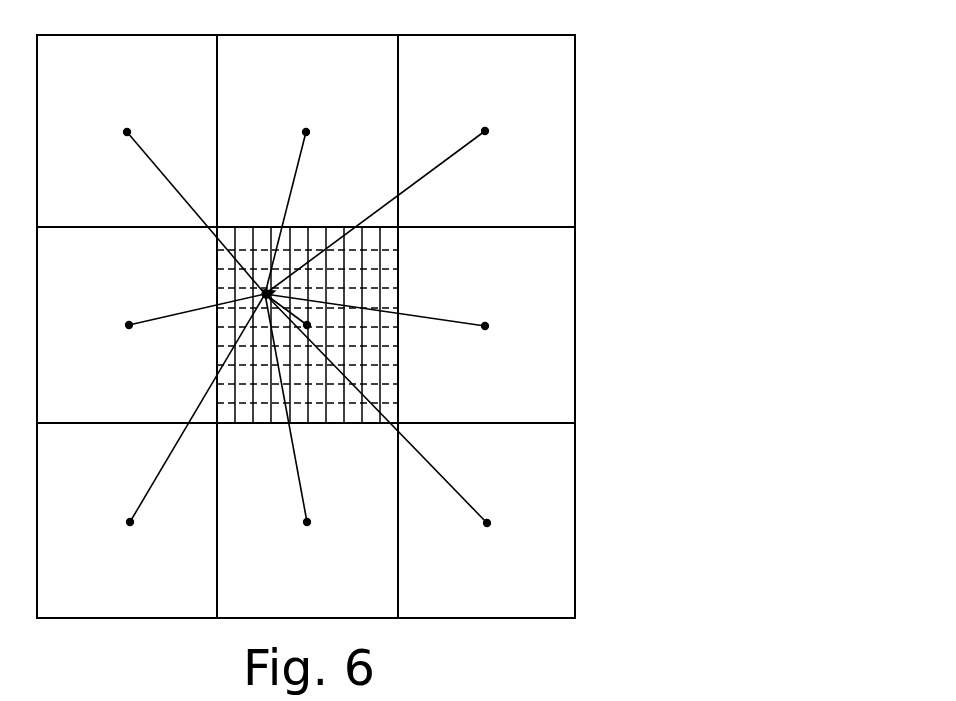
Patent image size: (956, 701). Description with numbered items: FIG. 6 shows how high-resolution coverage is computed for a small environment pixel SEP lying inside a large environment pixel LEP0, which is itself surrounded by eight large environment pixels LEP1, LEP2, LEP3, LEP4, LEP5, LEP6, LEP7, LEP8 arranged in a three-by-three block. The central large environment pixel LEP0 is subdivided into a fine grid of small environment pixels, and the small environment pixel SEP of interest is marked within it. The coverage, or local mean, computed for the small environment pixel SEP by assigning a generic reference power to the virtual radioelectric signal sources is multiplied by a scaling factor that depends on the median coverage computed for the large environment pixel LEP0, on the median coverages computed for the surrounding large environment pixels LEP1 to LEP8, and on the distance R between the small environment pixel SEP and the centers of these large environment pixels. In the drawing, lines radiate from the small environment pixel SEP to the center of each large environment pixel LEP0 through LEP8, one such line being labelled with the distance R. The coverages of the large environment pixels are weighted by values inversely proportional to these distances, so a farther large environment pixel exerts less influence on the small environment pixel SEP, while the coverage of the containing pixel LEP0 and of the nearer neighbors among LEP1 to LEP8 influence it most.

The large environment pixel LEP0 is at (307, 325).
The large environment pixel LEP1 is at (179, 170).
The large environment pixel LEP2 is at (301, 170).
The large environment pixel LEP3 is at (391, 170).
The large environment pixel LEP4 is at (127, 365).
The large environment pixel LEP5 is at (391, 351).
The large environment pixel LEP6 is at (180, 446).
The large environment pixel LEP7 is at (302, 446).
The large environment pixel LEP8 is at (391, 446).
The distance R is at (197, 303).
The small environment pixel SEP is at (266, 294).